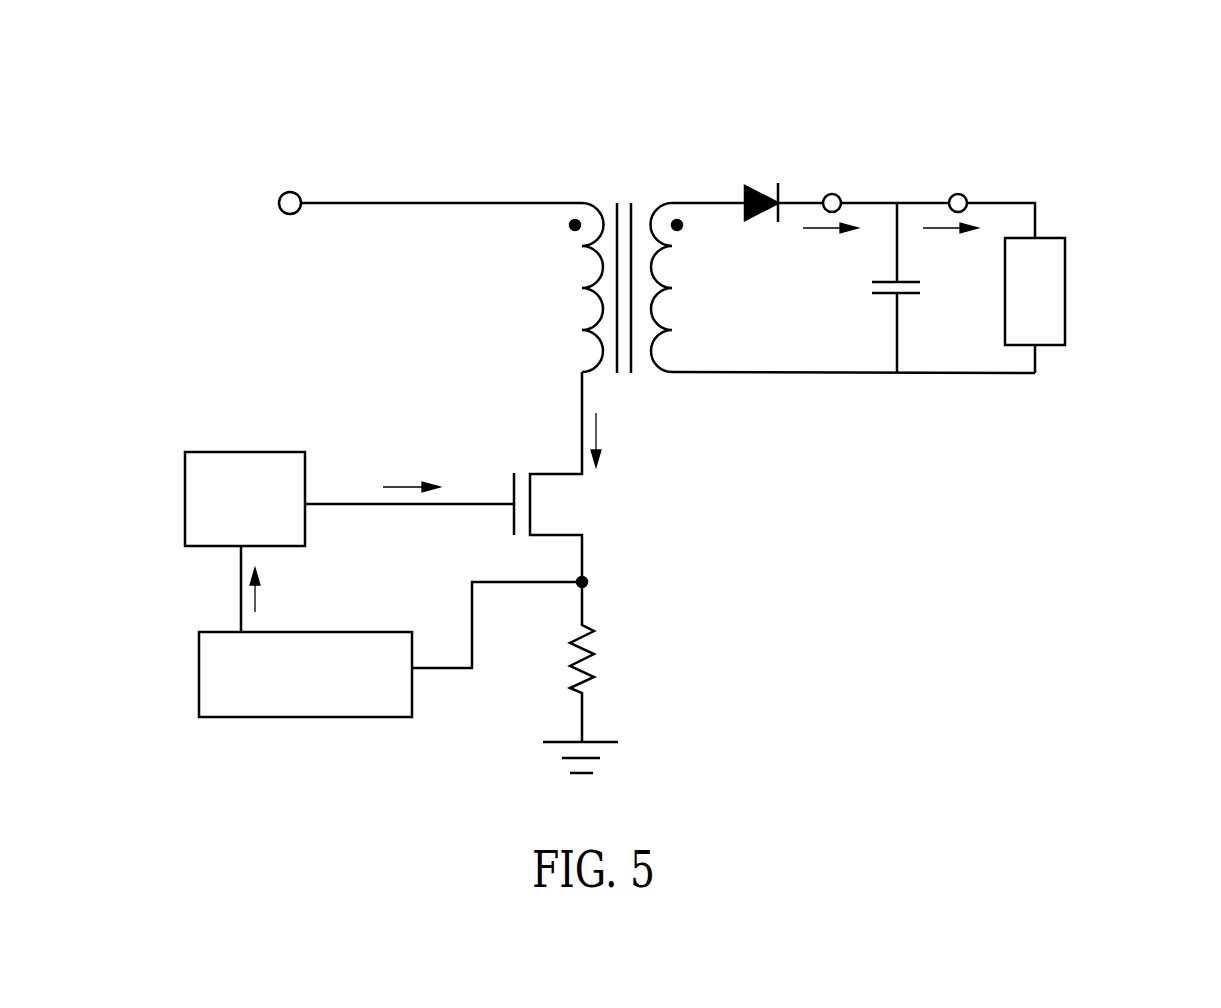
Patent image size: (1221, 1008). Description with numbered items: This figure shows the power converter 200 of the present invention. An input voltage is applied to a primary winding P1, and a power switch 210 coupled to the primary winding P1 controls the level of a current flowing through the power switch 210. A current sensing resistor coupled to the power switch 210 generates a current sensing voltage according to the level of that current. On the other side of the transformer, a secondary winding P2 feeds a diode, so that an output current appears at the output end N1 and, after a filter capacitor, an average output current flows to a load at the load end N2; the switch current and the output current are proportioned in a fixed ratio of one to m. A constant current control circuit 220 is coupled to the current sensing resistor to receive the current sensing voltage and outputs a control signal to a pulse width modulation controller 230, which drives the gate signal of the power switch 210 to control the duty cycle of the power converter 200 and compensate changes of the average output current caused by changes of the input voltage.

The power converter 200 is at (1062, 117).
The power switch 210 is at (572, 510).
The constant current control circuit 220 is at (326, 687).
The pulse width modulation controller 230 is at (266, 512).
The primary winding P1 is at (558, 303).
The secondary winding P2 is at (696, 302).
The output end N1 is at (831, 194).
The load end N2 is at (957, 194).